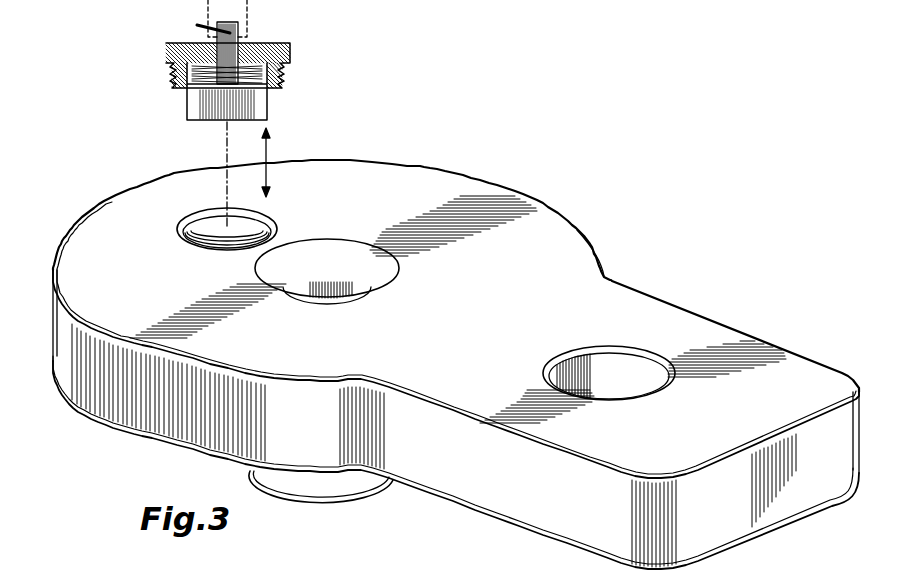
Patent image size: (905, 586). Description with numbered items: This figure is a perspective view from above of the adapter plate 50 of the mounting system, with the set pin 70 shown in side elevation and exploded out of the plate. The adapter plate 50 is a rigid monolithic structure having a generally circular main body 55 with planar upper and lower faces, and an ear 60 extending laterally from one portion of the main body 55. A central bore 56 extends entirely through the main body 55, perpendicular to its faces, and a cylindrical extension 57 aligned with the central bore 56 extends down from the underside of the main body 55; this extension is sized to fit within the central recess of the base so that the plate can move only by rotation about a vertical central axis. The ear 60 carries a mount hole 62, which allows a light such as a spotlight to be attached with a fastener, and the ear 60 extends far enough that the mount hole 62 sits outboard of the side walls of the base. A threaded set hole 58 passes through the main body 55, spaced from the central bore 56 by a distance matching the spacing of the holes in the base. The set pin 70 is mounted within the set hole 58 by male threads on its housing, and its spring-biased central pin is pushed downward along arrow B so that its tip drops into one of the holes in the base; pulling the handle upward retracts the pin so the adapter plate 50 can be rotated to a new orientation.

The adapter plate 50 is at (604, 248).
The main body 55 is at (95, 385).
The central bore 56 is at (347, 257).
The cylindrical extension 57 is at (316, 500).
The set hole 58 is at (202, 232).
The ear 60 is at (753, 377).
The mount hole 62 is at (620, 365).
The set pin 70 is at (292, 78).
The arrow B is at (270, 152).